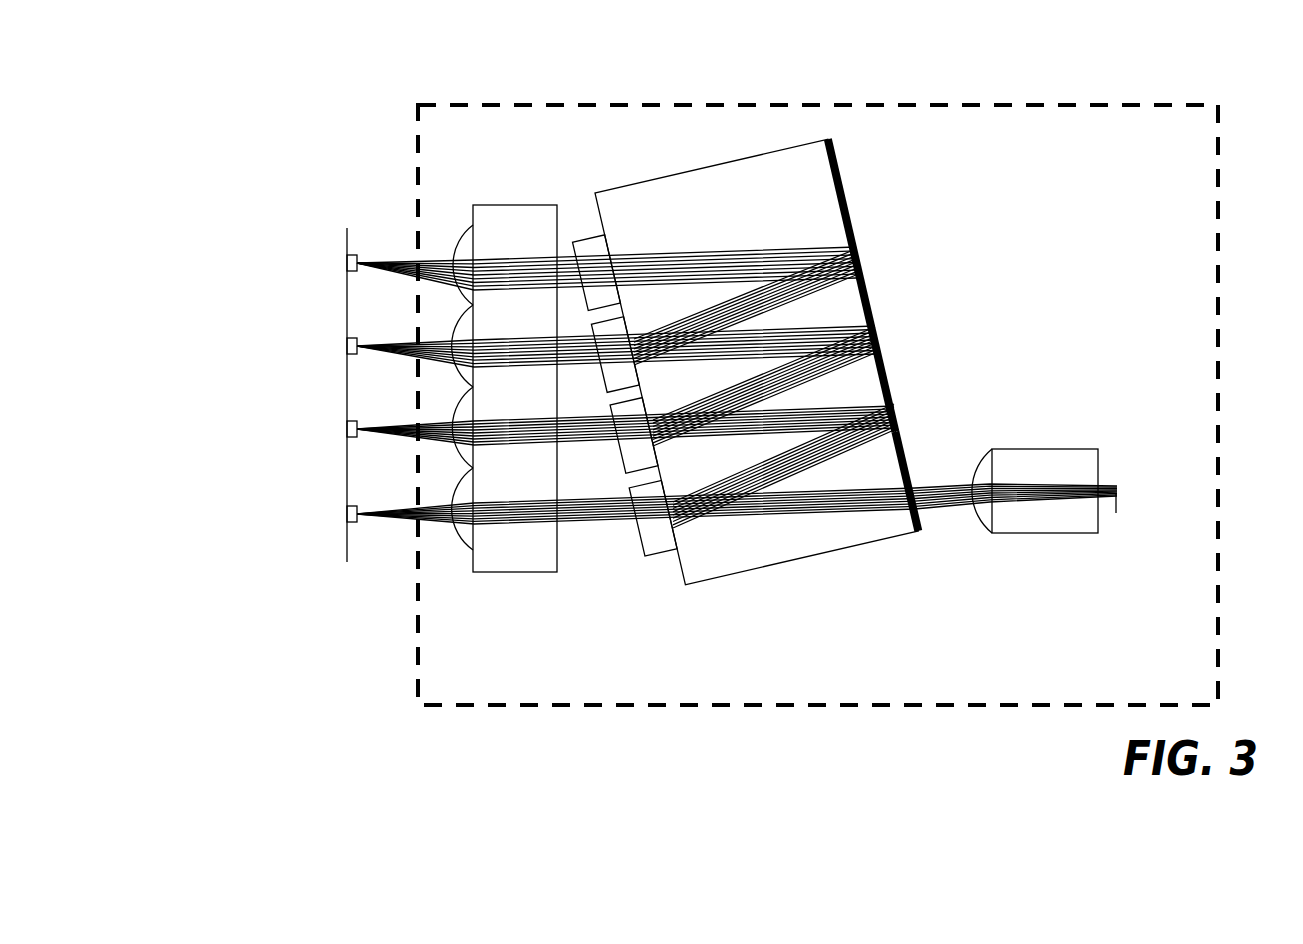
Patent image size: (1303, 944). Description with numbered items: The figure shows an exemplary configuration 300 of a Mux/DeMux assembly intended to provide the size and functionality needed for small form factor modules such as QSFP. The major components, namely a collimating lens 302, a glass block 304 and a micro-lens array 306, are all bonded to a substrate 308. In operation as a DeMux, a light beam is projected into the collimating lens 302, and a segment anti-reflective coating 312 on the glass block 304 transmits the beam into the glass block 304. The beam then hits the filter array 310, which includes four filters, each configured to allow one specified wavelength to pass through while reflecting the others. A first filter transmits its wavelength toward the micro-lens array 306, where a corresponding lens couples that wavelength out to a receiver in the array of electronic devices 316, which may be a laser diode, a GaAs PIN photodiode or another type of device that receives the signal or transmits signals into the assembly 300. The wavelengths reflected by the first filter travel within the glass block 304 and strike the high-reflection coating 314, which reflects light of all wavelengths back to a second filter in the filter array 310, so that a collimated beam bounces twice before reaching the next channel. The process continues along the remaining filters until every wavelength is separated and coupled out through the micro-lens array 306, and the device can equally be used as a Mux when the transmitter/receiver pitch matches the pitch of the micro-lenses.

The Mux/DeMux assembly configuration 300 is at (674, 368).
The collimating lens 302 is at (1044, 442).
The glass block 304 is at (801, 561).
The micro-lens array 306 is at (543, 603).
The substrate 308 is at (818, 372).
The filter array 310 is at (581, 230).
The anti-reflective coating 312 is at (932, 533).
The high-reflection coating 314 is at (868, 276).
The array of electronic devices 316 is at (343, 293).